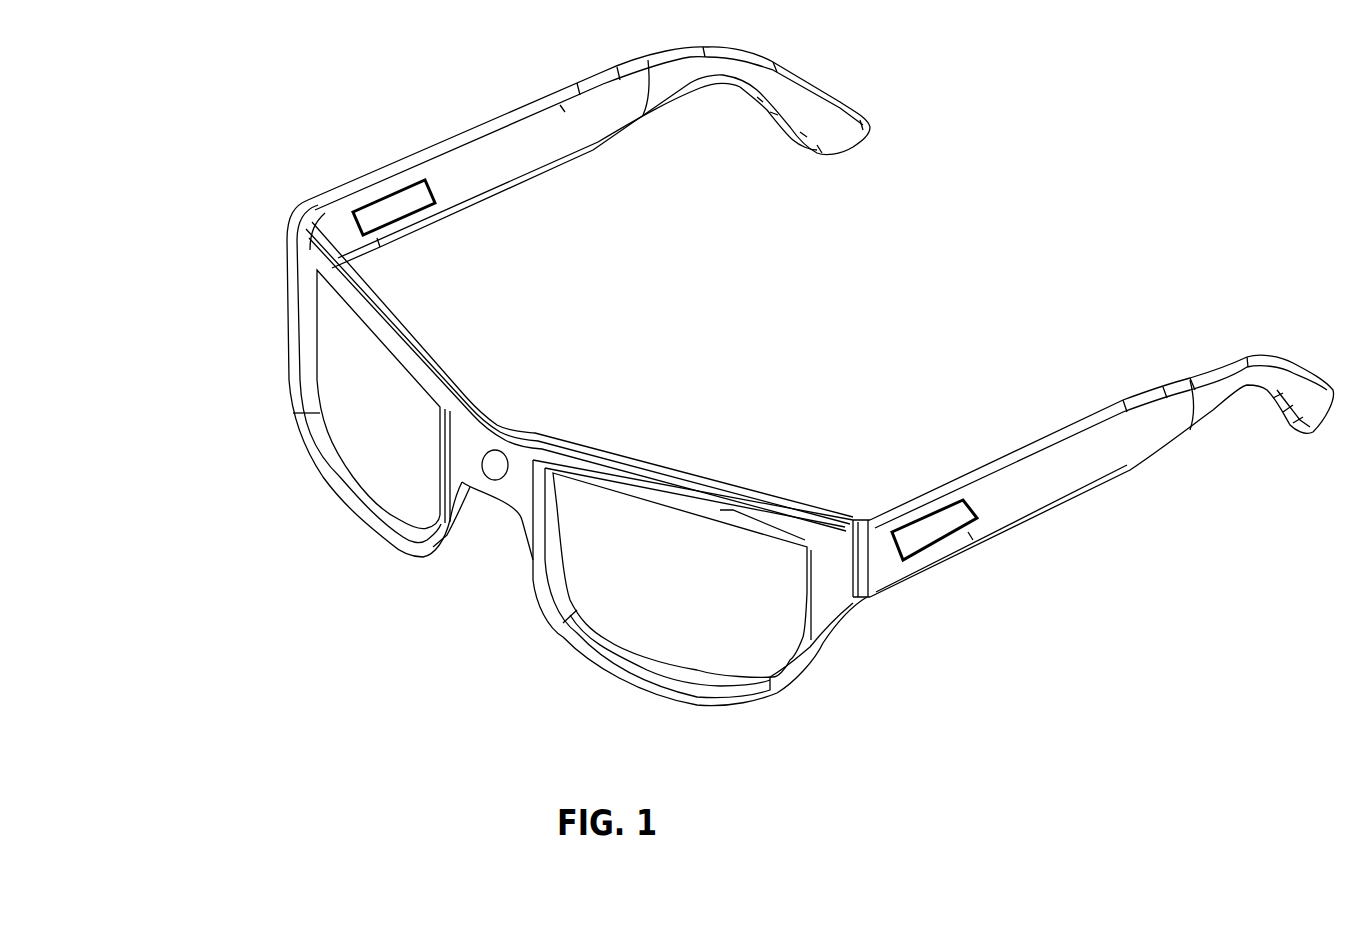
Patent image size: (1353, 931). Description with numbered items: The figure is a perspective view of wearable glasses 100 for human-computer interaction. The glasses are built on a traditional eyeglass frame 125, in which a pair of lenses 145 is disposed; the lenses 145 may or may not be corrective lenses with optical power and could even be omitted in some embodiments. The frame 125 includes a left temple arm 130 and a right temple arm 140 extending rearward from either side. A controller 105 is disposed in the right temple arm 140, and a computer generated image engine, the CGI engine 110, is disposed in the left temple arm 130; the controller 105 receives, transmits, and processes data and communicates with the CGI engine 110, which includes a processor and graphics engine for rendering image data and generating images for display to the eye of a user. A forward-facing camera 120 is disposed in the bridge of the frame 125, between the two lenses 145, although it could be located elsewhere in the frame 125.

The wearable glasses 100 is at (313, 135).
The controller 105 is at (407, 222).
The CGI engine 110 is at (952, 544).
The camera 120 is at (496, 449).
The frame 125 is at (578, 453).
The left temple arm 130 is at (1096, 481).
The right temple arm 140 is at (568, 163).
The lenses 145 is at (385, 430).